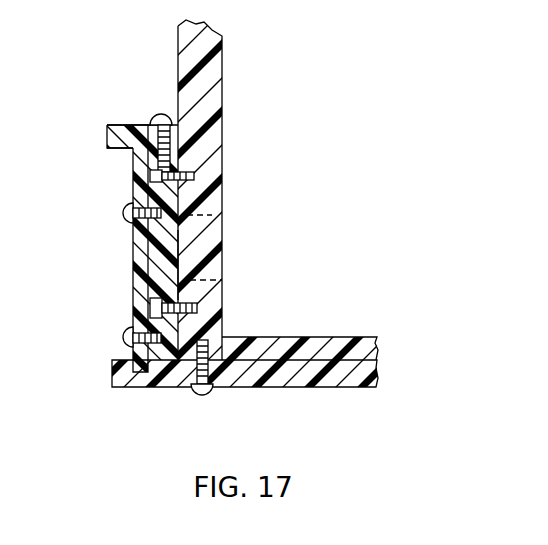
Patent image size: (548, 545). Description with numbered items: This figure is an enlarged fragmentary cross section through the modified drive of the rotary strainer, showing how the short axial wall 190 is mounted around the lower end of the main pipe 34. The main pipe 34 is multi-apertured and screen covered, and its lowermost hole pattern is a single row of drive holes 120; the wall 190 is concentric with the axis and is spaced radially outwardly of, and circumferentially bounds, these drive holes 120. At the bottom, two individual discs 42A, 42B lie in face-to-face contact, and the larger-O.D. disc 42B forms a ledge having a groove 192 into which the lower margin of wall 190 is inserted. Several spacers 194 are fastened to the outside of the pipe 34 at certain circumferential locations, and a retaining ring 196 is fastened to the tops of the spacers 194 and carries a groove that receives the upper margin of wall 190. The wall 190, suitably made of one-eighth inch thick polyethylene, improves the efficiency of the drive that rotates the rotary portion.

The main pipe 34 is at (214, 74).
The disc 42A is at (300, 344).
The disc 42B is at (353, 382).
The drive holes 120 is at (212, 215).
The short axial wall 190 is at (143, 282).
The groove 192 is at (147, 372).
The spacers 194 is at (172, 262).
The retaining ring 196 is at (118, 133).